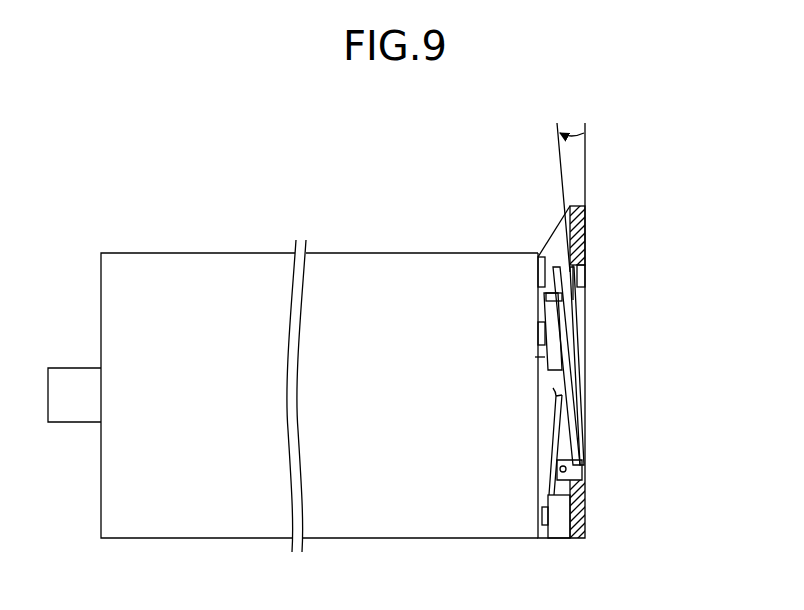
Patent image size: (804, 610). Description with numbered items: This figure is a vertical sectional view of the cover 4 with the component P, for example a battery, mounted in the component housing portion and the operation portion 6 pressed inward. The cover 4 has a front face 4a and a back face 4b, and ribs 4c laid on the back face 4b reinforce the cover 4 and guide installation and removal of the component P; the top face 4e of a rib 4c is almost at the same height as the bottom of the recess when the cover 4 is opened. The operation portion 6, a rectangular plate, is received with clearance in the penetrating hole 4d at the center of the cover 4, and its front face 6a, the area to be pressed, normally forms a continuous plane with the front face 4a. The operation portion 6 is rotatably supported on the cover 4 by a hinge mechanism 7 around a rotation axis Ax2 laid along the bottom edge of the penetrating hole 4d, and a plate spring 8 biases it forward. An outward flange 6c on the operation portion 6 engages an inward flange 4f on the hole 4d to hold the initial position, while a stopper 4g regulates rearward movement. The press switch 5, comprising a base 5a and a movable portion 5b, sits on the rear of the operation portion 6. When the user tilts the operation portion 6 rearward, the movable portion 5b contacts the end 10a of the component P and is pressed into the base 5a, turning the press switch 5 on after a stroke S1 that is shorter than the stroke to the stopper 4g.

The component P is at (375, 250).
The stroke S1 is at (571, 184).
The cover 4 is at (590, 203).
The front face 4a is at (584, 230).
The back face 4b is at (556, 228).
The rib 4c is at (582, 432).
The penetrating hole 4d is at (584, 283).
The top face 4e is at (545, 408).
The flange 4f is at (584, 268).
The stopper 4g is at (542, 270).
The press switch 5 is at (536, 325).
The base 5a is at (545, 357).
The movable portion 5b is at (540, 336).
The operation portion 6 is at (580, 382).
The front face 6a is at (574, 325).
The flange 6c is at (552, 298).
The hinge mechanism 7 is at (576, 462).
The plate spring 8 is at (553, 450).
The end 10a is at (568, 444).
The rotation axis Ax2 is at (585, 475).